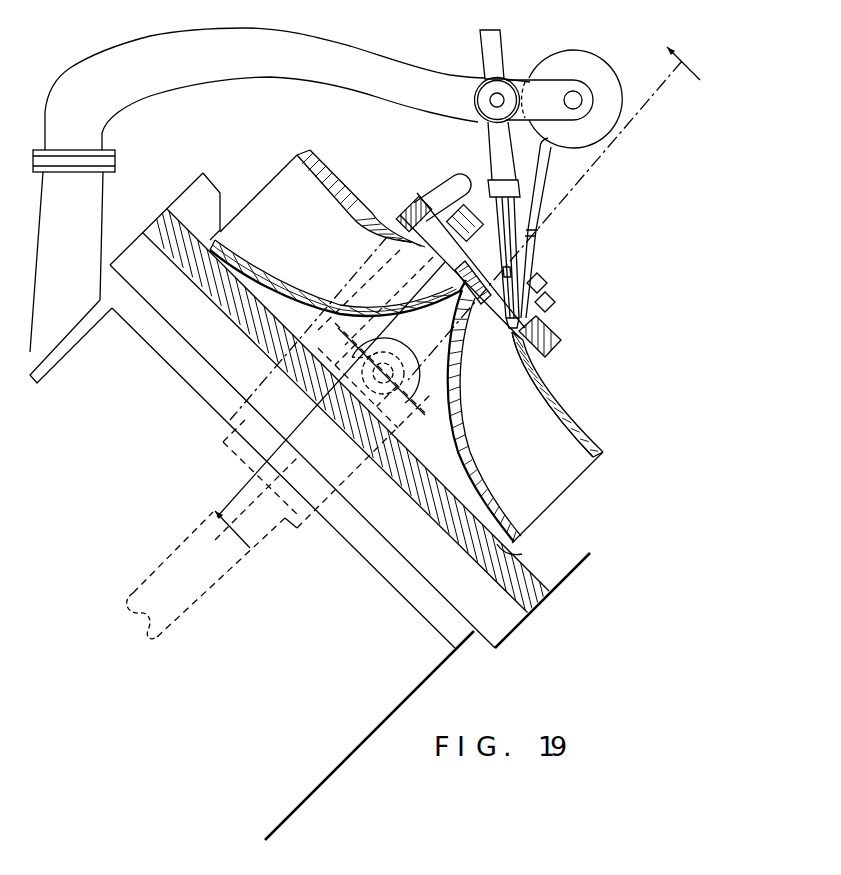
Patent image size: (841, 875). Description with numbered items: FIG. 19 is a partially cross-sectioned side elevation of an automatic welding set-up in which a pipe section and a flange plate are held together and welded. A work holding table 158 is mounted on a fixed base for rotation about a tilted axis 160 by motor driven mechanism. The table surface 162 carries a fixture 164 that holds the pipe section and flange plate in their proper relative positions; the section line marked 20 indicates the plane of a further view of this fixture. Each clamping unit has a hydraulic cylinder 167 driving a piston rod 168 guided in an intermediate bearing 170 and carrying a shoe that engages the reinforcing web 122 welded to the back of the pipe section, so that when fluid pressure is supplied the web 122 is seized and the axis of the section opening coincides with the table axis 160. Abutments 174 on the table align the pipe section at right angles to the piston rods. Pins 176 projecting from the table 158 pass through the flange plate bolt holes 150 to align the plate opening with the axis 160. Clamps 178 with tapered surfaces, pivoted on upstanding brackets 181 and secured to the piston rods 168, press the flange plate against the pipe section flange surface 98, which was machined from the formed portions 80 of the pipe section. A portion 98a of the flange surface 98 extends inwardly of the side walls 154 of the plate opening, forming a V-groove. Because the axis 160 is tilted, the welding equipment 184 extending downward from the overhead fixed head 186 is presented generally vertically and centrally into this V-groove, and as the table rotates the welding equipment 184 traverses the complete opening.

The overhead fixed head 186 is at (390, 68).
The section line 20- 20 is at (469, 304).
The tilted axis 160 is at (577, 186).
The welding equipment 184 is at (542, 257).
The clamps 178 is at (535, 277).
The side walls 154 is at (536, 308).
The flange surface 98 is at (540, 328).
The upstanding brackets 181 is at (490, 358).
The reinforcing web 122 is at (420, 393).
The hydraulic cylinder 167 is at (399, 349).
The piston rod 168 is at (394, 368).
The intermediate bearing 170 is at (372, 348).
The portions of the pipe section 80 is at (420, 240).
The flange plate bolt holes 150 is at (407, 196).
The pins 176 is at (443, 188).
The portion of the flange surface 98a is at (478, 196).
The abutments 174 is at (222, 240).
The fixture 164 is at (522, 554).
The table surface 162 is at (500, 582).
The work holding table 158 is at (413, 684).